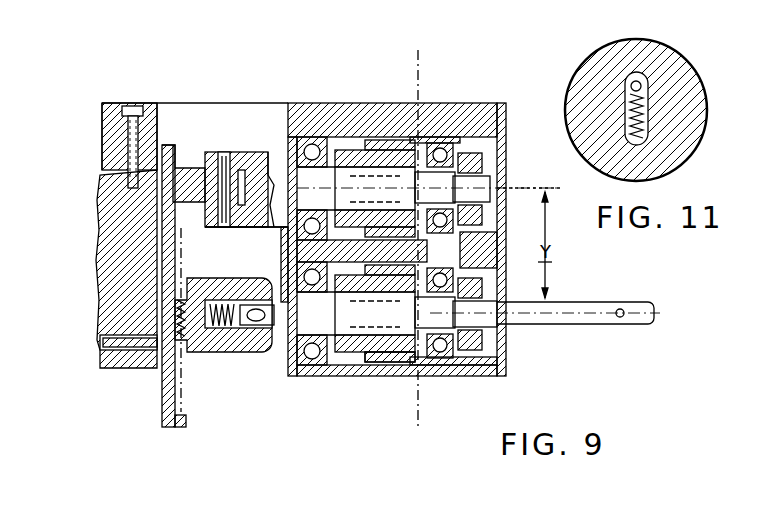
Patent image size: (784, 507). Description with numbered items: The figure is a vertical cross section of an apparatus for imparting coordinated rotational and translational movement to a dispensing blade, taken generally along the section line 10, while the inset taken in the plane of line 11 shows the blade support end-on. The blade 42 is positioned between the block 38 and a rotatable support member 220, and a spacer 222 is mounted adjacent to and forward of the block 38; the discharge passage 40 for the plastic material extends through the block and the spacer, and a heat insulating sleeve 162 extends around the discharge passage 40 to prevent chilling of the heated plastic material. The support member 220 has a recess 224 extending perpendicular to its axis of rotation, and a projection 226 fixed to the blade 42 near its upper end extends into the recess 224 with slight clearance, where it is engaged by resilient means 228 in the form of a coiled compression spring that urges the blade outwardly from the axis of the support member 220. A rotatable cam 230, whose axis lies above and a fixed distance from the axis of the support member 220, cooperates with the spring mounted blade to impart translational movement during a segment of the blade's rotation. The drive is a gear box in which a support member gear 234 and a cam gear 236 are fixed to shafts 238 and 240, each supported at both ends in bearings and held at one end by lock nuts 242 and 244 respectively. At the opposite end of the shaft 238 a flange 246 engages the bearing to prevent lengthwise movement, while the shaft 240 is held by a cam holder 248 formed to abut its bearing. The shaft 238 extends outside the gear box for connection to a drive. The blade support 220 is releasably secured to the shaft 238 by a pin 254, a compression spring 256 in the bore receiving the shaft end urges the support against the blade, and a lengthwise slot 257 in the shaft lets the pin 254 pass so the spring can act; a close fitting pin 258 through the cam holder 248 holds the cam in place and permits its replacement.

In FIG. 9, the section line 10- 10 is at (416, 48).
In FIG. 9, the line 11— 11 is at (170, 237).
In FIG. 9, the block 38 is at (97, 278).
In FIG. 9, the discharge passage 40 is at (100, 343).
In FIG. 9, the blade 42 is at (162, 420).
In FIG. 9, the heat insulating sleeve 162 is at (126, 364).
In FIG. 9, the rotatable support member 220 is at (232, 354).
In FIG. 11, the rotatable support member 220 is at (690, 72).
In FIG. 9, the spacer 222 is at (100, 232).
In FIG. 11, the recess 224 is at (632, 78).
In FIG. 9, the projection 226 is at (186, 300).
In FIG. 11, the projection 226 is at (628, 88).
In FIG. 11, the resilient means 228 is at (646, 118).
In FIG. 9, the rotatable cam 230 is at (166, 143).
In FIG. 9, the support member gear 234 is at (388, 354).
In FIG. 9, the cam gear 236 is at (372, 150).
In FIG. 9, the shaft 238 is at (397, 313).
In FIG. 9, the shaft 240 is at (428, 188).
In FIG. 9, the lock nut 242 is at (500, 348).
In FIG. 9, the lock nut 244 is at (500, 156).
In FIG. 9, the flange 246 is at (192, 168).
In FIG. 9, the cam holder 248 is at (277, 160).
In FIG. 9, the pin 254 is at (255, 328).
In FIG. 9, the compression spring 256 is at (222, 330).
In FIG. 9, the lengthwise slot 257 is at (254, 310).
In FIG. 9, the pin 258 is at (224, 158).